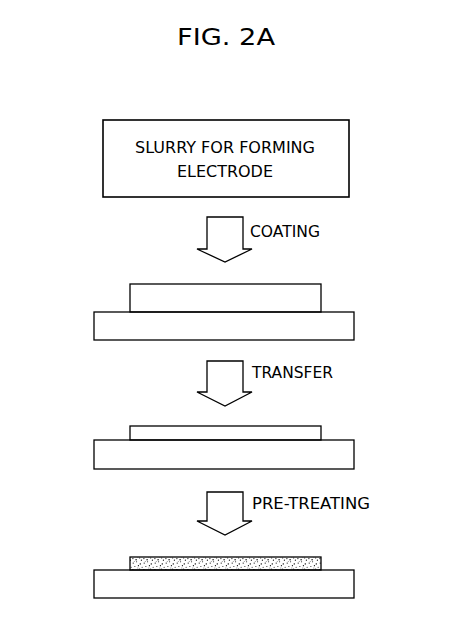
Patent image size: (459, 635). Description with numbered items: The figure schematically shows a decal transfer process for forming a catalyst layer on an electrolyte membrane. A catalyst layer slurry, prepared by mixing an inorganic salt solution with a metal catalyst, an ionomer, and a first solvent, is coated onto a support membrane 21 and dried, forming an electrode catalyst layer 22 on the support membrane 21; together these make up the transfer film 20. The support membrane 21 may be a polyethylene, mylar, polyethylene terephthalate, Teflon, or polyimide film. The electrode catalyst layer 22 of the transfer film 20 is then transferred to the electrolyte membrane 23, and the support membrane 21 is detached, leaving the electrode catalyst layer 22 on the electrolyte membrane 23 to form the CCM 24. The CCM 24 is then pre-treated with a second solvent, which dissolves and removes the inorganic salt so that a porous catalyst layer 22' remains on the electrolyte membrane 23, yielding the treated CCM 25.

The transfer film 20 is at (78, 316).
The support membrane 21 is at (354, 326).
The electrode catalyst layer 22 is at (252, 362).
The porous catalyst layer 22' is at (254, 562).
The electrolyte membrane 23 is at (354, 454).
The CCM 24 is at (78, 447).
The treated CCM 25 is at (78, 577).